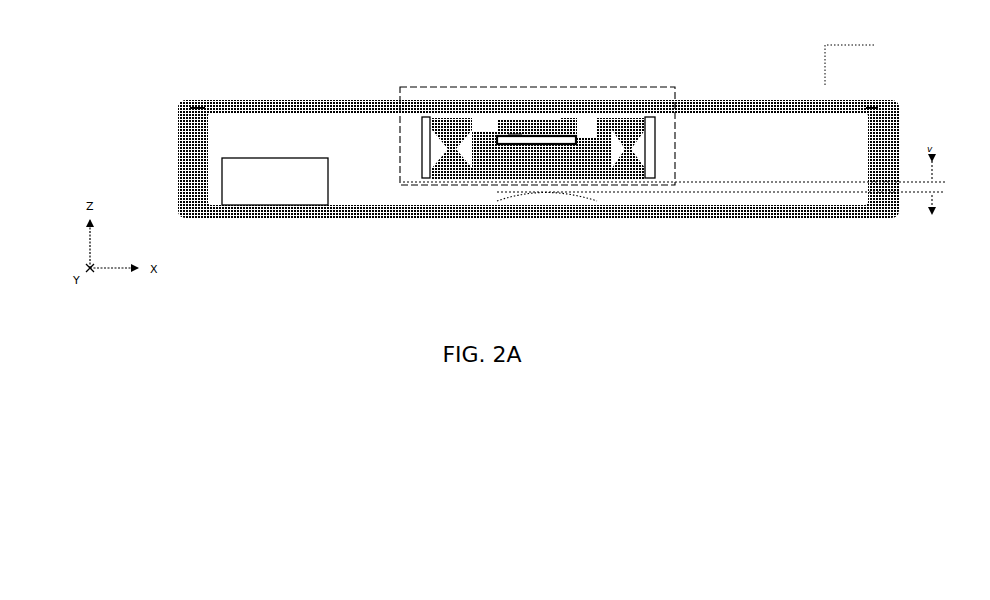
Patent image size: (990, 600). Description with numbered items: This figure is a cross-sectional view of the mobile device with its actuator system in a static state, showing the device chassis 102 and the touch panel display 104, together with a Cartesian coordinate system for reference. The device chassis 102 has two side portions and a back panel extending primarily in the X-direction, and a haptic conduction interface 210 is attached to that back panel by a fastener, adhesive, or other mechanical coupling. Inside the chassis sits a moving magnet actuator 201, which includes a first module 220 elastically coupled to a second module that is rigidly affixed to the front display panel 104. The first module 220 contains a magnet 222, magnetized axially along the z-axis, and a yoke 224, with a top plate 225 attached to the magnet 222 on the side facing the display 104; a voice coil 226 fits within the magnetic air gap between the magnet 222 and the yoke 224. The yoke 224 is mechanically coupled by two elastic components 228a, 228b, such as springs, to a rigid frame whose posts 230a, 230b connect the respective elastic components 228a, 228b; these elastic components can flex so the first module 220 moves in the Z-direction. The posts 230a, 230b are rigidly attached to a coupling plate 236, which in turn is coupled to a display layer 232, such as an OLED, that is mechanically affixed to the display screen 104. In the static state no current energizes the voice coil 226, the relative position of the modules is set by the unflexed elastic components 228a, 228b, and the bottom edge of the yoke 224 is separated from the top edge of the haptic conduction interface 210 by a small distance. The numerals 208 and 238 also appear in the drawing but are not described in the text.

The device chassis 102 is at (176, 155).
The touch panel display 104 is at (810, 102).
The moving magnet actuator 201 is at (643, 87).
The rotation direction 208 is at (950, 354).
The haptic conduction interface 210 is at (500, 198).
The first module 220 is at (538, 134).
The magnet 222 is at (560, 162).
The yoke 224 is at (597, 155).
The top plate 225 is at (516, 133).
The voice coil 226 is at (577, 123).
The elastic component 228a is at (457, 167).
The elastic component 228b is at (618, 168).
The post 230a is at (423, 152).
The post 230b is at (658, 132).
The display layer 232 is at (858, 108).
The coupling plate 236 is at (424, 135).
The battery 238 is at (275, 181).